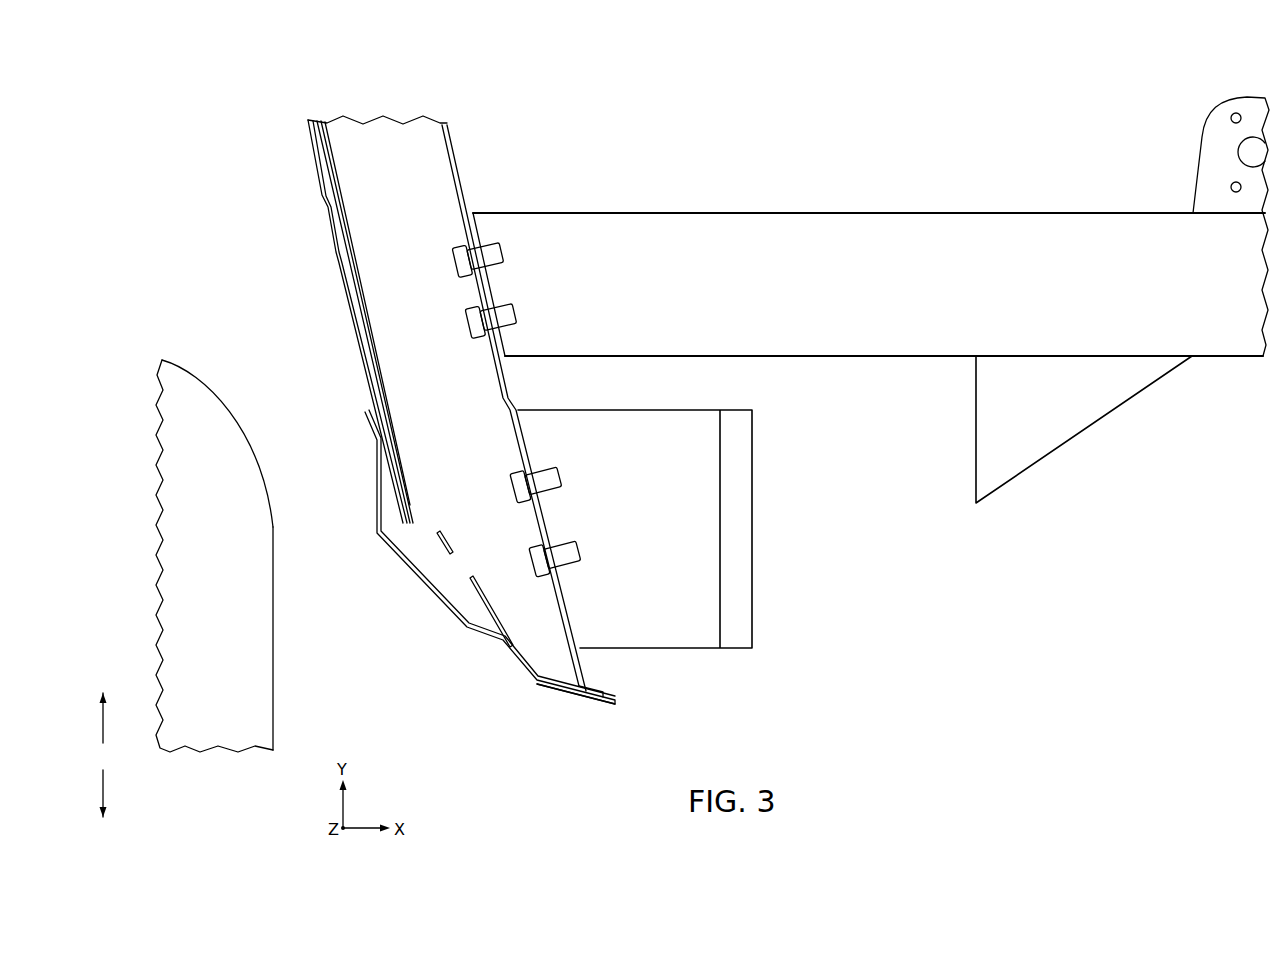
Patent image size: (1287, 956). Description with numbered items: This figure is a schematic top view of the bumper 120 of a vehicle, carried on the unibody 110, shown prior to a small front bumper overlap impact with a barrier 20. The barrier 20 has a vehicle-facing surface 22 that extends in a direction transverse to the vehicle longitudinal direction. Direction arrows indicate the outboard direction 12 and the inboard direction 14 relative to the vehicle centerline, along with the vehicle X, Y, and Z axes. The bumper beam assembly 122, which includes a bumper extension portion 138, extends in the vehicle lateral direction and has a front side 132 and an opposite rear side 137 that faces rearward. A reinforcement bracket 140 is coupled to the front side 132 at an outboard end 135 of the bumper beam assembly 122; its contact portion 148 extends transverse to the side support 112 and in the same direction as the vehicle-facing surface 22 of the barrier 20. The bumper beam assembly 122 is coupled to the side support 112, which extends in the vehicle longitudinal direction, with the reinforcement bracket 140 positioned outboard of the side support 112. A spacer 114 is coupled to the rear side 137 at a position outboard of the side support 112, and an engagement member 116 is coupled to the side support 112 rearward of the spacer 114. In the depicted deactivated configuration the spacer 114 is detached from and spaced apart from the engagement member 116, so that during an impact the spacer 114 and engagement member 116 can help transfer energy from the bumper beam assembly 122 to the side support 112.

The outboard direction 12 is at (103, 787).
The inboard direction 14 is at (103, 722).
The barrier 20 is at (195, 508).
The vehicle-facing surface 22 is at (273, 608).
The unibody 110 is at (871, 375).
The side support 112 is at (816, 213).
The spacer 114 is at (678, 648).
The engagement member 116 is at (1079, 436).
The bumper 120 is at (321, 316).
The bumper beam assembly 122 is at (297, 195).
The front side 132 is at (364, 388).
The outboard end 135 is at (422, 572).
The rear side 137 is at (458, 183).
The bumper extension portion 138 is at (577, 708).
The reinforcement bracket 140 is at (471, 655).
The contact portion 148 is at (375, 493).